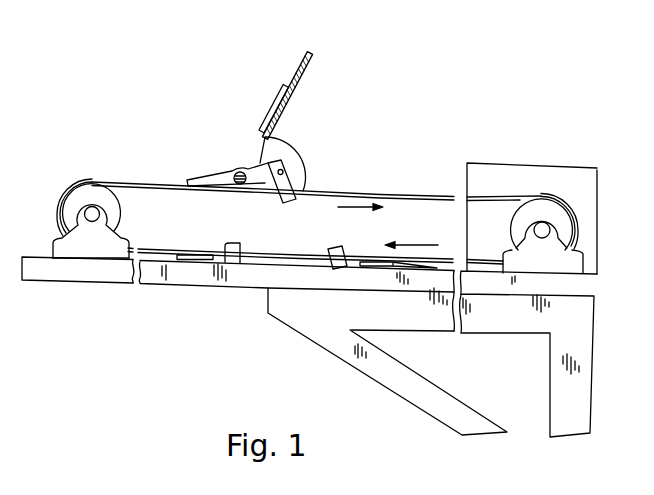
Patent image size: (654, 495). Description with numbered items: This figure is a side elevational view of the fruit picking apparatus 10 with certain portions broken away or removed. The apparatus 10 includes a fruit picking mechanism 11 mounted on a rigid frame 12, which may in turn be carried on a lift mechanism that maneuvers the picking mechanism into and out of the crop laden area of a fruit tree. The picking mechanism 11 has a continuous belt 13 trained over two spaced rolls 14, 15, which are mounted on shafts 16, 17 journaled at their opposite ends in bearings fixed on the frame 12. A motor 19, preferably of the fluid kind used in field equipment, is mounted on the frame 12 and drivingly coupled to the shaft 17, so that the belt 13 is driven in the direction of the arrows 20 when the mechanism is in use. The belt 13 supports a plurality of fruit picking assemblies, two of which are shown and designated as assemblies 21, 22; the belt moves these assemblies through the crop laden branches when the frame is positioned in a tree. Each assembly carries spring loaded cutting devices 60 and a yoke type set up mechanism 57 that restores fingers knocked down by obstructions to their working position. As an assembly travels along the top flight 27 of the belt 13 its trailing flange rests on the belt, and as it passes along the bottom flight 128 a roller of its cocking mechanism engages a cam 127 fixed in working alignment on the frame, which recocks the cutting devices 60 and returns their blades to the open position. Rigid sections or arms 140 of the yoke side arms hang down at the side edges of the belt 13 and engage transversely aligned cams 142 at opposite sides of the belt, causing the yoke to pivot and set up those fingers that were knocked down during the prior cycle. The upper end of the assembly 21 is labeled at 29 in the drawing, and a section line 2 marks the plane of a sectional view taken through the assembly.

The section line 2- 2 is at (222, 172).
The apparatus 10 is at (347, 103).
The fruit picking mechanism 11 is at (574, 234).
The rigid frame 12 is at (597, 358).
The continuous belt 13 is at (107, 182).
The roll 14 is at (118, 208).
The roll 15 is at (510, 229).
The shaft 16 is at (84, 213).
The shaft 17 is at (548, 238).
The motor 19 is at (560, 167).
The arrows 20 is at (354, 208).
The fruit picking assembly 21 is at (315, 72).
The fruit picking assembly 22 is at (328, 267).
The top flight 27 is at (322, 188).
The blade edge 29 is at (307, 51).
The yoke type set up mechanism 57 is at (210, 180).
The spring loaded cutting devices 60 is at (278, 106).
The cam 127 is at (176, 257).
The bottom flight 128 is at (155, 246).
The arms 140 is at (283, 203).
The cams 142 is at (222, 229).